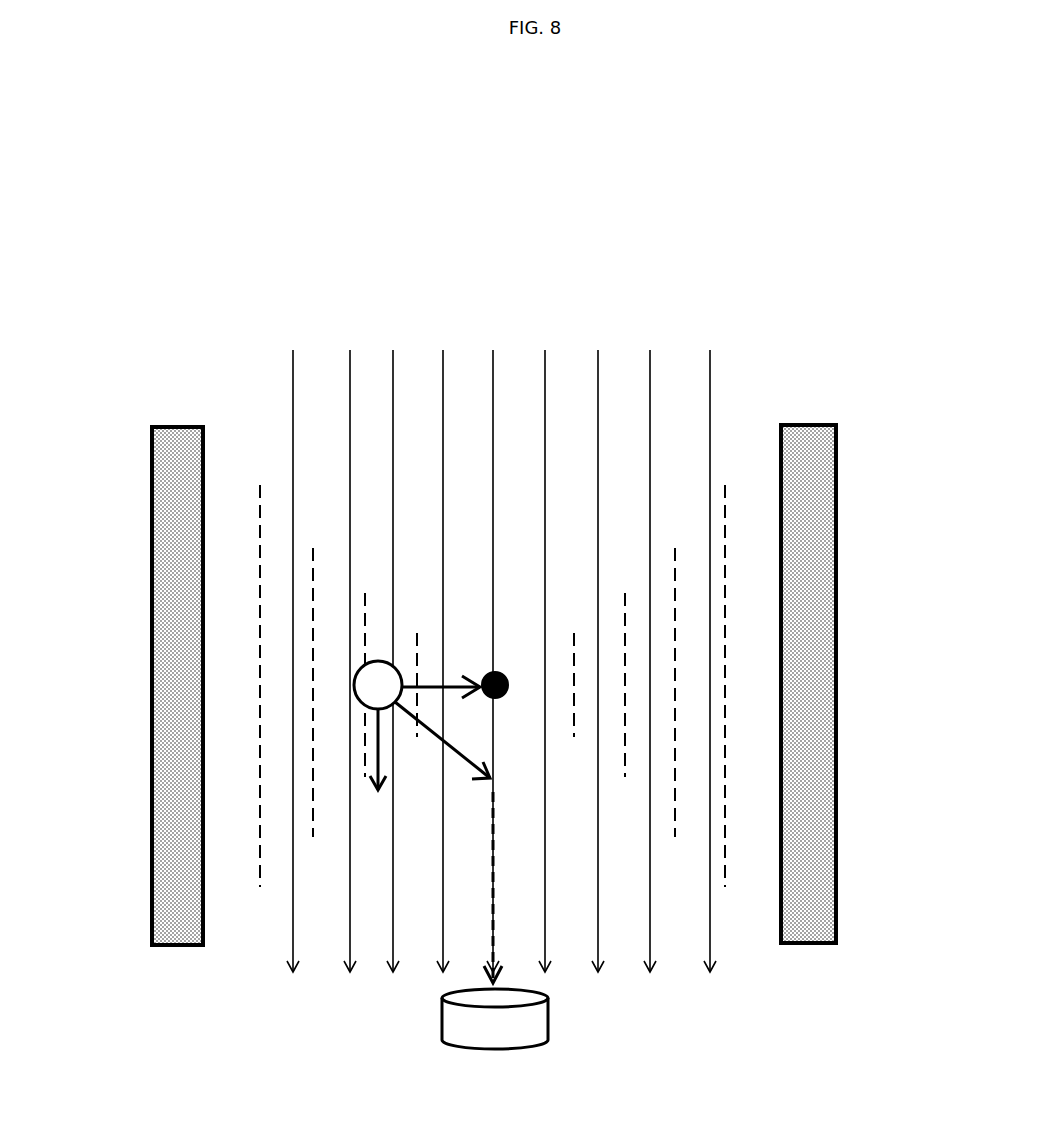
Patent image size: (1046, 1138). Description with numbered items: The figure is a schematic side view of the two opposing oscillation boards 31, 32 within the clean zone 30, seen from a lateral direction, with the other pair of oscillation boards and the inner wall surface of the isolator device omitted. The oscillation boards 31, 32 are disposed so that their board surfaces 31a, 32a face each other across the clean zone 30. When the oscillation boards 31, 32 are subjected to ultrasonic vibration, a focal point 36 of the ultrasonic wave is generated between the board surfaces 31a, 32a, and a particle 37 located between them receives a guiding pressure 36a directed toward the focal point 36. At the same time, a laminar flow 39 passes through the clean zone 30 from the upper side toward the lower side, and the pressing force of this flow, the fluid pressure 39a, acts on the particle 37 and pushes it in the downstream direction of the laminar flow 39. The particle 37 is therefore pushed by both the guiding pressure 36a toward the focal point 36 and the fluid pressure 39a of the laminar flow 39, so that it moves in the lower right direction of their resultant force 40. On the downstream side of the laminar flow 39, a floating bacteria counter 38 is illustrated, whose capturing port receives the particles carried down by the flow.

The clean zone 30 is at (748, 362).
The oscillation board 31 is at (178, 608).
The board surface 31a is at (205, 747).
The oscillation board 32 is at (812, 630).
The board surface 32a is at (775, 746).
The focal point of the ultrasonic wave 36 is at (498, 672).
The guiding pressure 36a is at (437, 684).
The particle 37 is at (378, 660).
The floating bacteria counter 38 is at (517, 1030).
The laminar flow 39 is at (594, 392).
The fluid pressure 39a is at (370, 740).
The resultant force 40 is at (448, 758).